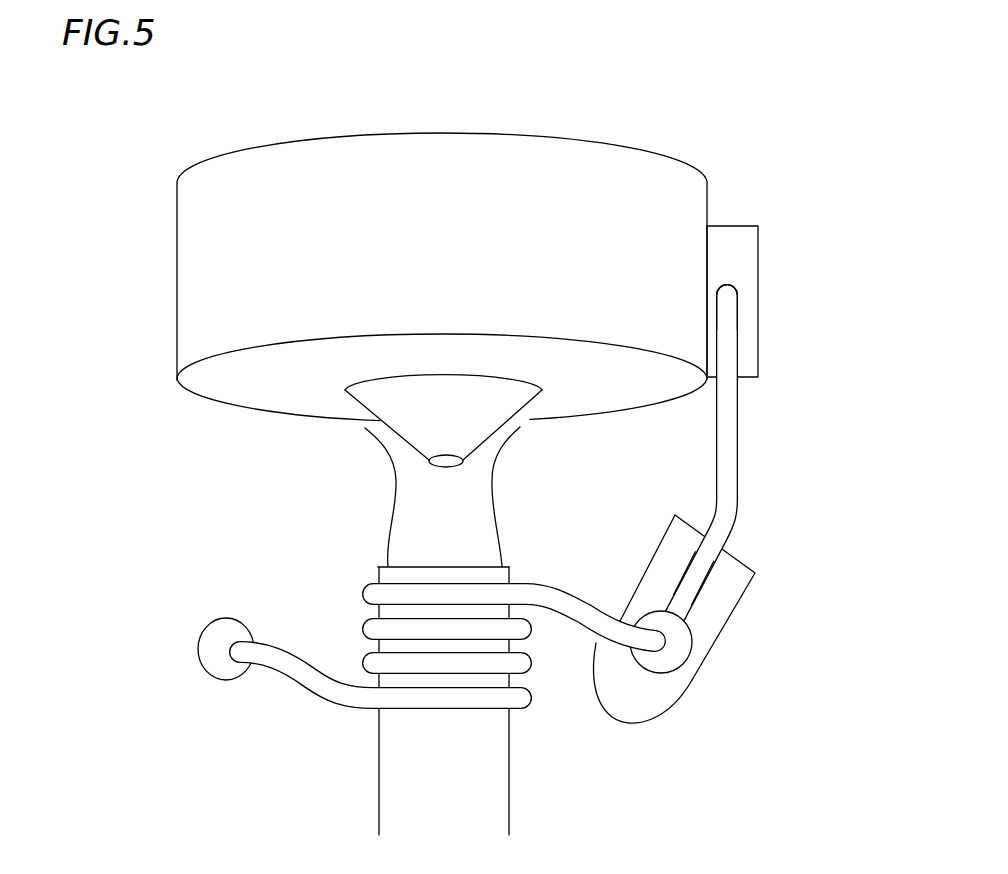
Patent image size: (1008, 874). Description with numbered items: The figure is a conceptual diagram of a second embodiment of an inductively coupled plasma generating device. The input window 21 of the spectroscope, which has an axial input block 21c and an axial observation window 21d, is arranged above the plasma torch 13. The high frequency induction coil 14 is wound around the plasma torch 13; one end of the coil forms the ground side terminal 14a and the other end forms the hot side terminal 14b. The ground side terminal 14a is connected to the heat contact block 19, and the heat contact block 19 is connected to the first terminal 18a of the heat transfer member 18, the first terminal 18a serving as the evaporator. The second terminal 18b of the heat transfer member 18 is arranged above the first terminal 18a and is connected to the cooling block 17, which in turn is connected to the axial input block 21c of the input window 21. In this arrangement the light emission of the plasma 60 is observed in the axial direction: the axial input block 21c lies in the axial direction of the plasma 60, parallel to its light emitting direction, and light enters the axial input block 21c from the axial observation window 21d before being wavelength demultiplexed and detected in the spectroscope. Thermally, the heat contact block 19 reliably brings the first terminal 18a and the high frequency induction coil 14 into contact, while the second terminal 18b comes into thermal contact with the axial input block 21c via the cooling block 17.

The plasma torch 13 is at (430, 780).
The high frequency induction coil 14 is at (520, 662).
The ground side terminal 14a is at (667, 663).
The hot side terminal 14b is at (224, 665).
The cooling block 17 is at (737, 238).
The heat transfer member 18 is at (738, 408).
The first terminal 18a is at (683, 607).
The second terminal 18b is at (728, 295).
The heat contact block 19 is at (733, 575).
The input window 21 is at (212, 150).
The axial input block 21c is at (212, 312).
The axial observation window 21d is at (432, 450).
The plasma 60 is at (415, 540).